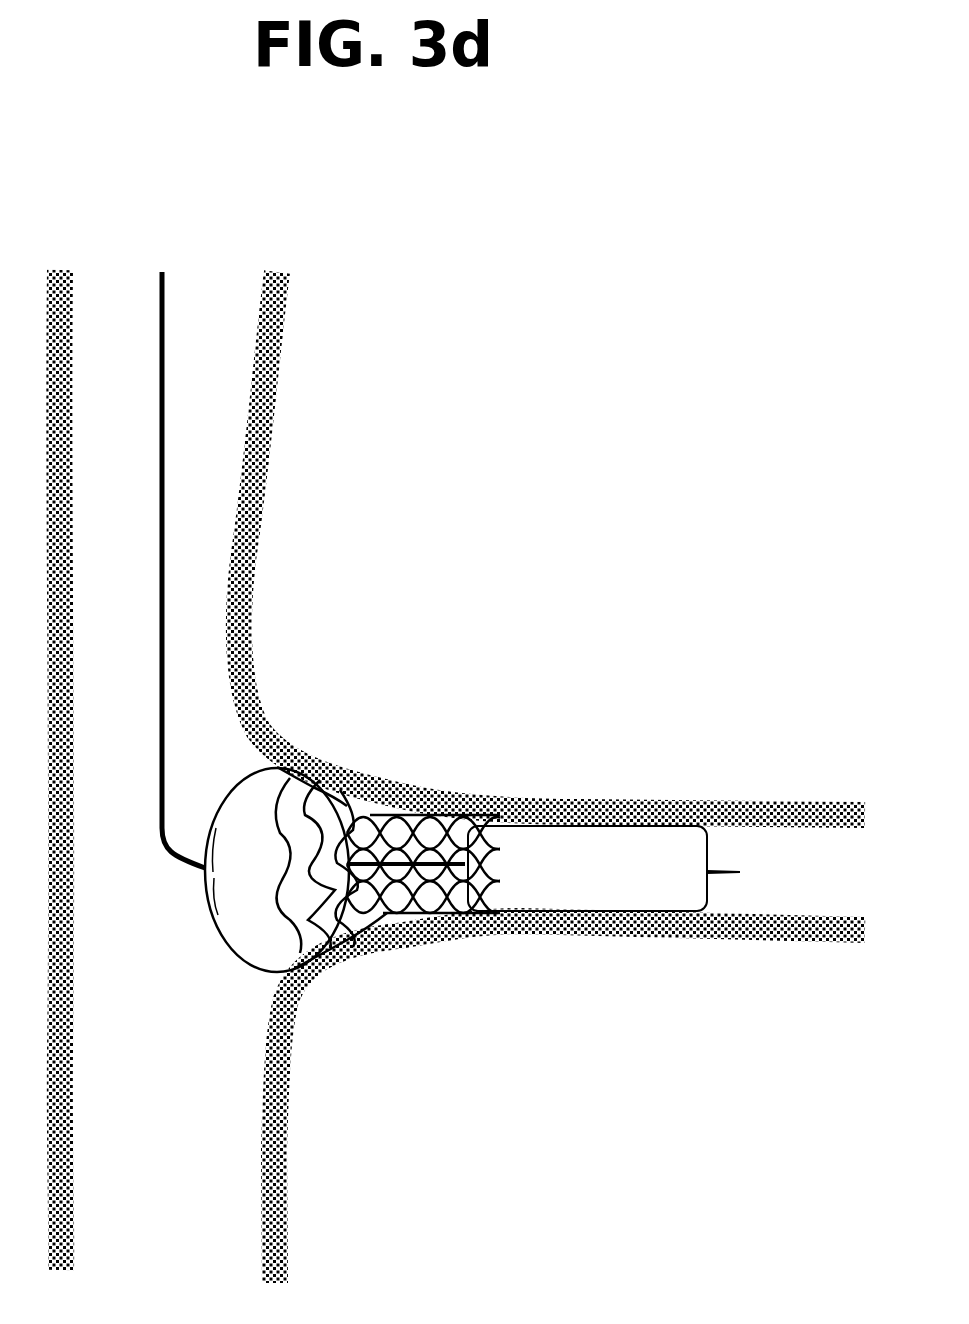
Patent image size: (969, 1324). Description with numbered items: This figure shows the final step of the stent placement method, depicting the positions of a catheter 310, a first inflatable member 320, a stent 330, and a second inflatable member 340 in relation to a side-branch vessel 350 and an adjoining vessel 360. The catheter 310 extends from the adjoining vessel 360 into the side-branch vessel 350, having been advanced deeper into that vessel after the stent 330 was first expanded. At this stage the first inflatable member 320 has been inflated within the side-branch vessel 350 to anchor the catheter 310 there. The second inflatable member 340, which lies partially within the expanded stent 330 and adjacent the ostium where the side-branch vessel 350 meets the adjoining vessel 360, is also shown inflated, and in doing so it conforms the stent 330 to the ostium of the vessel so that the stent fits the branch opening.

The catheter 310 is at (200, 418).
The first inflatable member 320 is at (550, 927).
The stent 330 is at (383, 950).
The second inflatable member 340 is at (251, 778).
The side-branch vessel 350 is at (763, 962).
The adjoining vessel 360 is at (314, 1163).